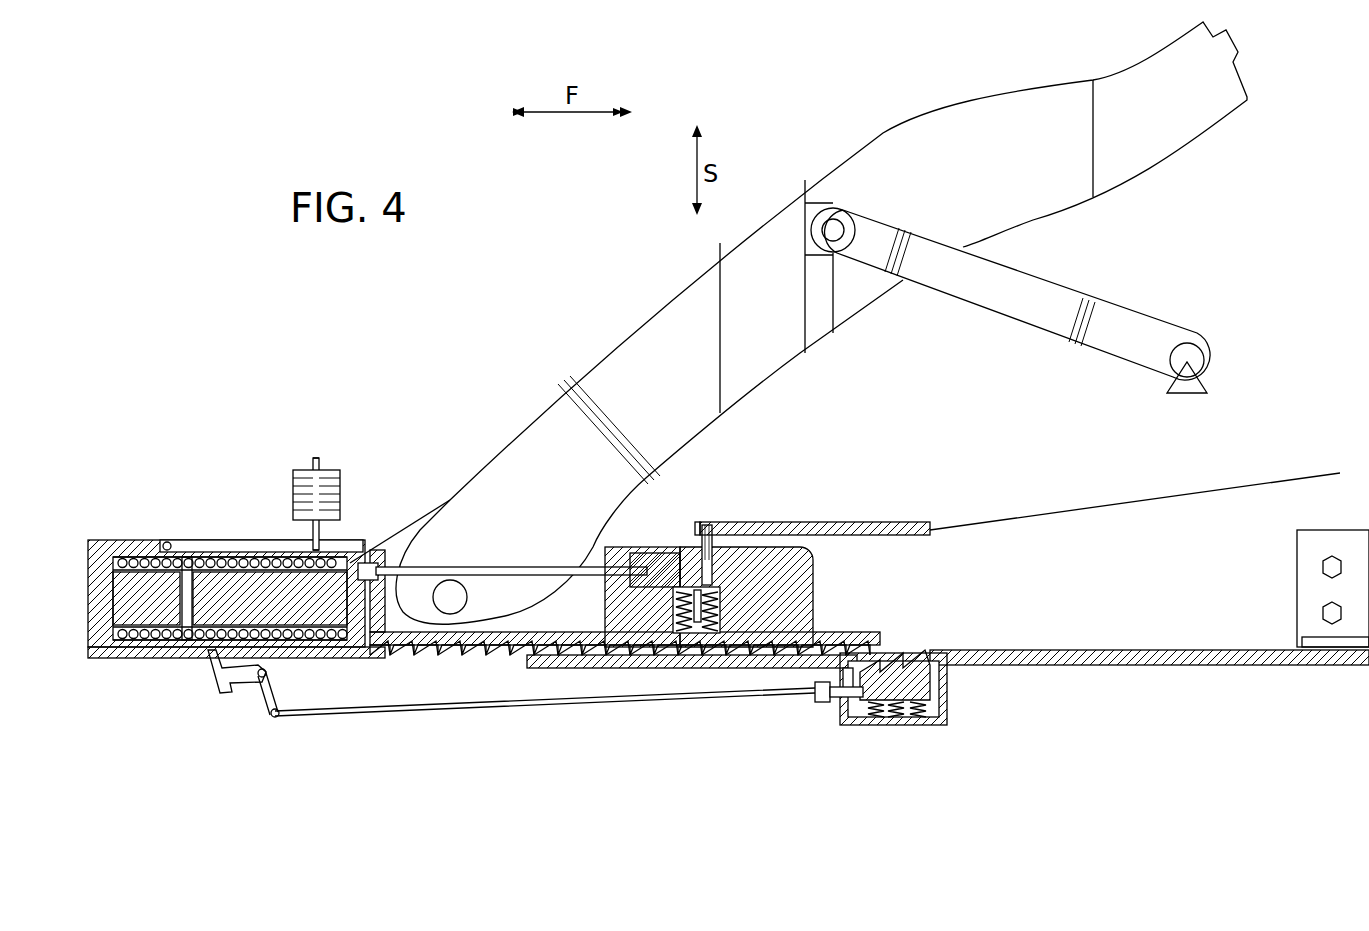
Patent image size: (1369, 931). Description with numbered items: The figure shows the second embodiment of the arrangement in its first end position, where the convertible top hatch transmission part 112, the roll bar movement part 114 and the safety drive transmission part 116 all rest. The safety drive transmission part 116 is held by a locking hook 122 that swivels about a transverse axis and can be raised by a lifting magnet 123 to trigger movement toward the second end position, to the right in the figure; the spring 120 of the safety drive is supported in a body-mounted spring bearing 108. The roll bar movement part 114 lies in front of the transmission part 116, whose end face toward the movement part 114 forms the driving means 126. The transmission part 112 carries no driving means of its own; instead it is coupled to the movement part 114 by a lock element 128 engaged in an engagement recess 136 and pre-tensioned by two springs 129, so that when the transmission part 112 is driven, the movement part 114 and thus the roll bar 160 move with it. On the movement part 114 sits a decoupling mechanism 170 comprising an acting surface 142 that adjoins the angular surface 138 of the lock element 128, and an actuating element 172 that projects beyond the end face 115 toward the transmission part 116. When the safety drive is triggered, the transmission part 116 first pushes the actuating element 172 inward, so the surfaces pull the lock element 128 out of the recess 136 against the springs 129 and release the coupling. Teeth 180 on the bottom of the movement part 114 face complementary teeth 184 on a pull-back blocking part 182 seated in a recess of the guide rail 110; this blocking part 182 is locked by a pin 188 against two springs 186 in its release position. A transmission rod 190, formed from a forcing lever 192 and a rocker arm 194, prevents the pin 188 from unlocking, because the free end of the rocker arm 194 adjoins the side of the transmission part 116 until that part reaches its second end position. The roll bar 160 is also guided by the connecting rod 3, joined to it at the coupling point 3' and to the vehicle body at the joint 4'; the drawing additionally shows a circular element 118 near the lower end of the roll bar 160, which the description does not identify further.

The connecting rod 3 is at (1018, 295).
The coupling point 3' is at (830, 172).
The joint 4' is at (1220, 368).
The spring bearing 108 is at (118, 540).
The guide rail 110 is at (1113, 666).
The convertible top hatch transmission part 112 is at (845, 522).
The roll bar movement part 114 is at (765, 658).
The end face 115 is at (393, 652).
The safety drive transmission part 116 is at (380, 552).
The roller 118 is at (450, 598).
The spring 120 is at (165, 545).
The locking hook 122 is at (223, 545).
The lifting magnet 123 is at (300, 470).
The driving means 126 is at (343, 652).
The lock element 128 is at (765, 521).
The springs 129 is at (705, 658).
The engagement recess 136 is at (715, 527).
The angular surface 138 is at (700, 545).
The acting surface 142 is at (645, 658).
The roll bar 160 is at (633, 372).
The decoupling mechanism 170 is at (507, 545).
The actuating element 172 is at (372, 562).
The teeth 180 is at (609, 670).
The pull-back blocking part 182 is at (945, 700).
The teeth 184 is at (905, 640).
The springs 186 is at (882, 719).
The pin 188 is at (843, 705).
The transmission rod 190 is at (268, 720).
The forcing lever 192 is at (527, 708).
The rocker arm 194 is at (230, 690).